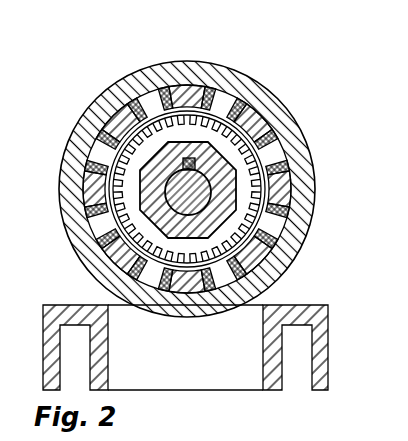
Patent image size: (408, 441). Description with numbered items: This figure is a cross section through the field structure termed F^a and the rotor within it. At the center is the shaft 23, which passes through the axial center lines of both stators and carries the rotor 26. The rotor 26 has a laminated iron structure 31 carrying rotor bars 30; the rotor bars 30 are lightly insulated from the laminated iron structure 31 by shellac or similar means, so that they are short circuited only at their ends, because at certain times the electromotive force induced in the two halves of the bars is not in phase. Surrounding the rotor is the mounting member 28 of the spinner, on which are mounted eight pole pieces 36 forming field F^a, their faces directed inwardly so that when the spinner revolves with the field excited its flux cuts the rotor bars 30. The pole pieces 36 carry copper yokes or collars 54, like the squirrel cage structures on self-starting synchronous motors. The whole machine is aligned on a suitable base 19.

The base 19 is at (224, 391).
The mounting member 28 is at (312, 181).
The pole pieces 36 is at (162, 62).
The copper yokes or collars 54 is at (104, 185).
The laminated iron structure 31 is at (187, 189).
The rotor bars 30 is at (176, 246).
The rotor 26 is at (218, 171).
The shaft 23 is at (173, 180).